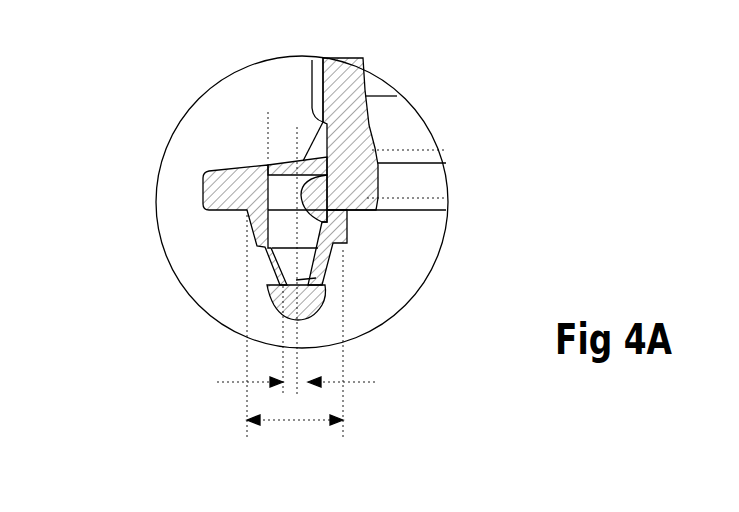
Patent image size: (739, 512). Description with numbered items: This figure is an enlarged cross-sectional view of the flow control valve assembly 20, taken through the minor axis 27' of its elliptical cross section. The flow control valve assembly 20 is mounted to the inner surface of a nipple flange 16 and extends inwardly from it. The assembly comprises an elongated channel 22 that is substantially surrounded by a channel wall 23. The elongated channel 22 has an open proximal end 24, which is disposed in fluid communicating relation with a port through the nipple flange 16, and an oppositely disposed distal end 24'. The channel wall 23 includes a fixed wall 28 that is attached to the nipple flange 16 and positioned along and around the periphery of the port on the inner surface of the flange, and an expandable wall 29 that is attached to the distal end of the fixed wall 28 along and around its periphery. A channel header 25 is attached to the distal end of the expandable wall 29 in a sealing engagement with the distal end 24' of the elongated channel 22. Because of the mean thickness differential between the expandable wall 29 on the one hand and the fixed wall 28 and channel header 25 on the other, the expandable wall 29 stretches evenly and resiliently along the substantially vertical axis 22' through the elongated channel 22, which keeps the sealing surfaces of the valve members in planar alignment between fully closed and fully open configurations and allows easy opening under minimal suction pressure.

The nipple flange 16 is at (203, 180).
The flow control valve assembly 20 is at (470, 237).
The elongated channel 22 is at (357, 234).
The substantially vertical axis 22' is at (242, 128).
The channel wall 23 is at (446, 163).
The open proximal end 24 is at (384, 121).
The distal end 24' is at (388, 294).
The channel header 25 is at (315, 313).
The minor axis 27' is at (217, 253).
The fixed wall 28 is at (250, 227).
The expandable wall 29 is at (270, 288).